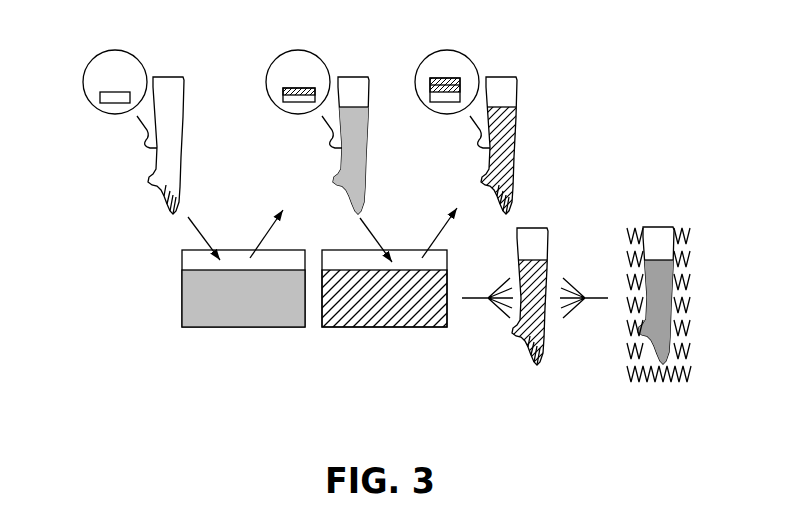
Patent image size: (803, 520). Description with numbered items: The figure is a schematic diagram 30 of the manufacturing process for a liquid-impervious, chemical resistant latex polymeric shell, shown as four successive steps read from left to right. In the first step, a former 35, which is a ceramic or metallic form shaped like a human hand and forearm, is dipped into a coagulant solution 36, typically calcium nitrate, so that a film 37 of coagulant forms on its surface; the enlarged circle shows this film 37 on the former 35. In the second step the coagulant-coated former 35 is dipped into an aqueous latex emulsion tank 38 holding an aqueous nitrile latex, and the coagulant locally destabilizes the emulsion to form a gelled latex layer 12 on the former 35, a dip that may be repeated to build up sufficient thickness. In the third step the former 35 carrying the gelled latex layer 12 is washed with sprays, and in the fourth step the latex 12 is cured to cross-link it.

The schematic diagram 30 is at (375, 231).
The former 35 is at (170, 86).
The film 37 is at (283, 97).
The gelled latex layer 12 is at (688, 262).
The coagulant solution 36 is at (243, 288).
The aqueous latex emulsion tank 38 is at (384, 288).